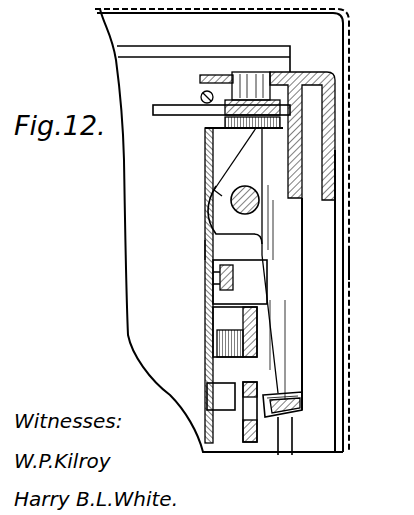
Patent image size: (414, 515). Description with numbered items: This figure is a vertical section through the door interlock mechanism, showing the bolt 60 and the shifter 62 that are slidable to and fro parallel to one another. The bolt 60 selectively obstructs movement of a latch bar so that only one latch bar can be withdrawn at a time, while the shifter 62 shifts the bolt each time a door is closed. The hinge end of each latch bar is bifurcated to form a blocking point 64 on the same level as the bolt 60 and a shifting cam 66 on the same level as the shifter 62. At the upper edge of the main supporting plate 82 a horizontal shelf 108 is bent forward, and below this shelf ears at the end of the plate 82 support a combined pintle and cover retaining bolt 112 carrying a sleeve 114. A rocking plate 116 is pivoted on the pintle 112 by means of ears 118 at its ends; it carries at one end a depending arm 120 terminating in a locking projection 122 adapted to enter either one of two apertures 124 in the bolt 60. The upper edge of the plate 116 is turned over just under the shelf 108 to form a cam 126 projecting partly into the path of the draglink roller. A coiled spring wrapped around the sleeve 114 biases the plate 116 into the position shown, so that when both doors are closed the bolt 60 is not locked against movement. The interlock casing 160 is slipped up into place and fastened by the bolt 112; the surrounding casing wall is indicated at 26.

The horizontal shelf 108 is at (200, 82).
The cam 126 is at (310, 95).
The rocking plate 116 is at (283, 152).
The main supporting plate 82 is at (335, 173).
The depending arm 120 is at (293, 257).
The casing 26 is at (381, 265).
The ears 118 is at (214, 192).
The combined pintle and cover retaining bolt 112 is at (232, 202).
The sleeve 114 is at (213, 220).
The interlock casing 160 is at (206, 243).
The shifter 62 is at (245, 320).
The shifting cam 66 is at (230, 347).
The blocking point 64 is at (222, 396).
The bolt 60 is at (249, 443).
The apertures 124 is at (280, 403).
The locking projection 122 is at (285, 412).